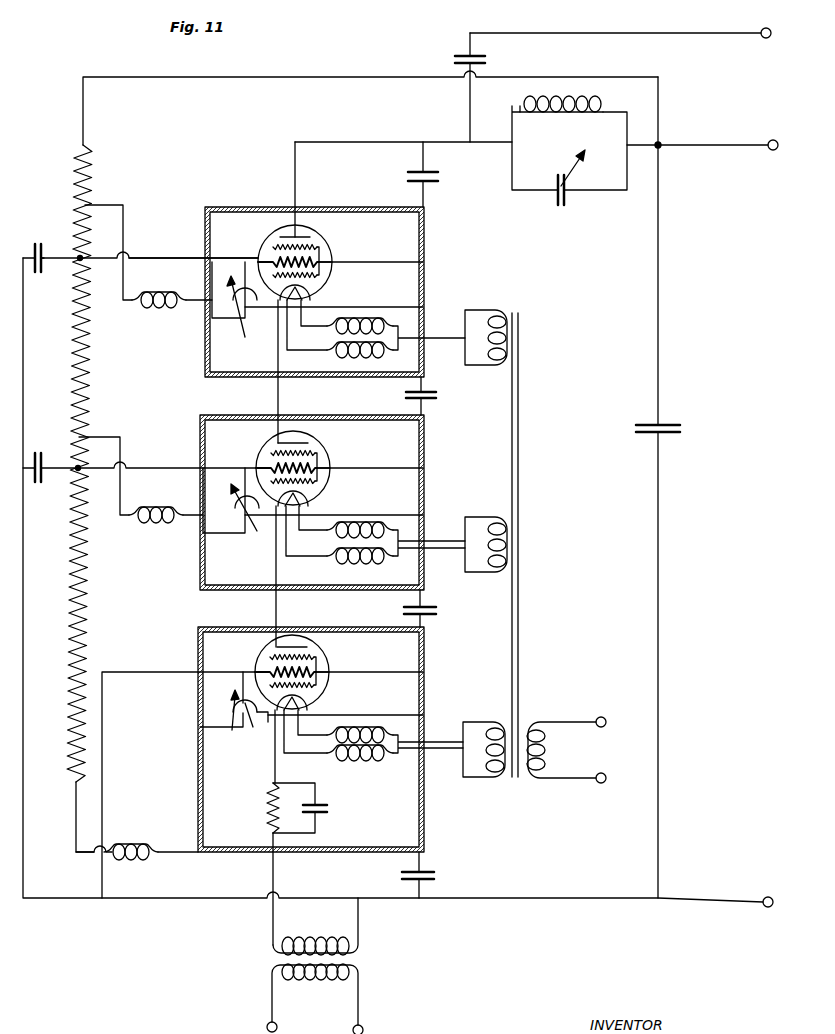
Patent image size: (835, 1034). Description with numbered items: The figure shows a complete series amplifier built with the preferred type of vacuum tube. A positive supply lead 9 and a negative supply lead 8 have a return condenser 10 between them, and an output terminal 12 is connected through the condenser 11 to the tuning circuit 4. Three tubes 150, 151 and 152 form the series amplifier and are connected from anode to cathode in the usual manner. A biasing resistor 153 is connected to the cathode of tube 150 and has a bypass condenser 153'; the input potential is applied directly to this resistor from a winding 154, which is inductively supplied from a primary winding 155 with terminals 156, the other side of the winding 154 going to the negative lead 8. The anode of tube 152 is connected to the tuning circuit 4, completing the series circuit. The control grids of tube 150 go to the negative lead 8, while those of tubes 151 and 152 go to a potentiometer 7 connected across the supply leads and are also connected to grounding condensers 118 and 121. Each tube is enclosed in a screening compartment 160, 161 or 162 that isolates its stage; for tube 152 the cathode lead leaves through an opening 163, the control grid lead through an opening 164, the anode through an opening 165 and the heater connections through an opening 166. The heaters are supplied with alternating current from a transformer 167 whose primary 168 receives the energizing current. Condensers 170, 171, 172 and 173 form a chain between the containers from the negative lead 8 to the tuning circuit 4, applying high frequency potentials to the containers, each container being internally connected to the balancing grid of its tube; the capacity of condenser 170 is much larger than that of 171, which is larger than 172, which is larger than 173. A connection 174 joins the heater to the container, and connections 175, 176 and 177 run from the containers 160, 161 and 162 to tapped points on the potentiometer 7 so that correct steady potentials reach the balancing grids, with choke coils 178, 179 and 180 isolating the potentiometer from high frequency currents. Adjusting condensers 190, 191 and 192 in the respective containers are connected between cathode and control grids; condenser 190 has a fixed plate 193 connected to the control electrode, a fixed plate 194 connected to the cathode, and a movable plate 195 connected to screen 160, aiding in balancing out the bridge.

The tuning circuit 4 is at (569, 150).
The potentiometer 7 is at (76, 200).
The negative supply lead 8 is at (773, 904).
The positive supply lead 9 is at (778, 147).
The return condenser 10 is at (656, 422).
The condenser 11 is at (464, 54).
The output terminal 12 is at (771, 35).
The grounding condenser 118 is at (62, 448).
The grounding condenser 121 is at (37, 244).
The tube 150 is at (339, 608).
The tube 151 is at (330, 455).
The tube 152 is at (332, 243).
The biasing resistor 153 is at (255, 827).
The bypass condenser 153' is at (313, 808).
The winding 154 is at (358, 949).
The primary winding 155 is at (359, 978).
The terminals 156 is at (315, 1024).
The screening compartment 160 is at (424, 650).
The screening compartment 161 is at (424, 462).
The screening compartment 162 is at (424, 222).
The opening 163 is at (278, 380).
The opening 164 is at (205, 258).
The opening 165 is at (292, 210).
The opening 166 is at (428, 340).
The transformer 167 is at (519, 592).
The primary of transformer 168 is at (566, 750).
The condenser 170 is at (426, 874).
The condenser 171 is at (426, 608).
The condenser 172 is at (428, 392).
The condenser 173 is at (427, 176).
The connection 174 is at (350, 310).
The connection 175 is at (80, 850).
The connection 176 is at (121, 482).
The connection 177 is at (123, 226).
The choke coil 178 is at (134, 859).
The choke coil 179 is at (144, 522).
The choke coil 180 is at (148, 306).
The adjusting condenser 190 is at (200, 715).
The adjusting condenser 191 is at (238, 520).
The adjusting condenser 192 is at (234, 303).
The fixed plate 193 is at (236, 706).
The fixed plate 194 is at (266, 722).
The movable plate 195 is at (236, 720).